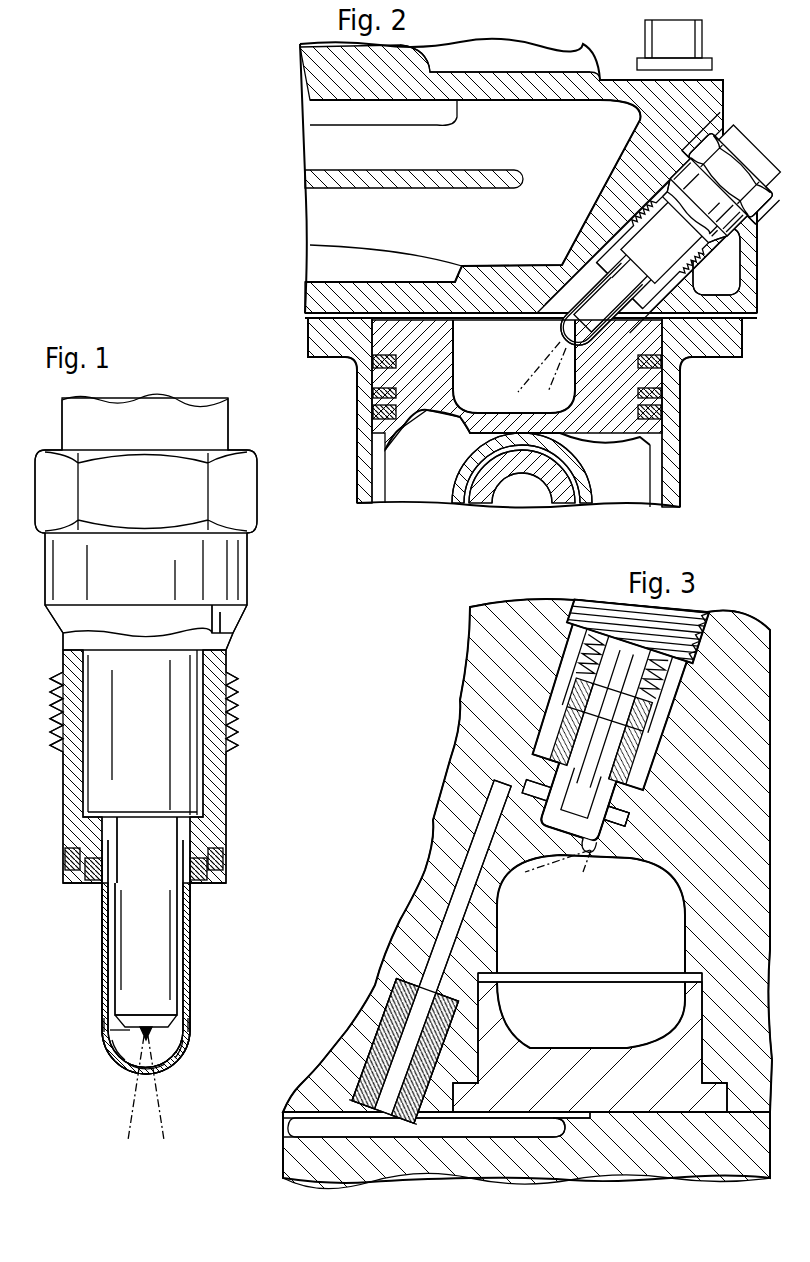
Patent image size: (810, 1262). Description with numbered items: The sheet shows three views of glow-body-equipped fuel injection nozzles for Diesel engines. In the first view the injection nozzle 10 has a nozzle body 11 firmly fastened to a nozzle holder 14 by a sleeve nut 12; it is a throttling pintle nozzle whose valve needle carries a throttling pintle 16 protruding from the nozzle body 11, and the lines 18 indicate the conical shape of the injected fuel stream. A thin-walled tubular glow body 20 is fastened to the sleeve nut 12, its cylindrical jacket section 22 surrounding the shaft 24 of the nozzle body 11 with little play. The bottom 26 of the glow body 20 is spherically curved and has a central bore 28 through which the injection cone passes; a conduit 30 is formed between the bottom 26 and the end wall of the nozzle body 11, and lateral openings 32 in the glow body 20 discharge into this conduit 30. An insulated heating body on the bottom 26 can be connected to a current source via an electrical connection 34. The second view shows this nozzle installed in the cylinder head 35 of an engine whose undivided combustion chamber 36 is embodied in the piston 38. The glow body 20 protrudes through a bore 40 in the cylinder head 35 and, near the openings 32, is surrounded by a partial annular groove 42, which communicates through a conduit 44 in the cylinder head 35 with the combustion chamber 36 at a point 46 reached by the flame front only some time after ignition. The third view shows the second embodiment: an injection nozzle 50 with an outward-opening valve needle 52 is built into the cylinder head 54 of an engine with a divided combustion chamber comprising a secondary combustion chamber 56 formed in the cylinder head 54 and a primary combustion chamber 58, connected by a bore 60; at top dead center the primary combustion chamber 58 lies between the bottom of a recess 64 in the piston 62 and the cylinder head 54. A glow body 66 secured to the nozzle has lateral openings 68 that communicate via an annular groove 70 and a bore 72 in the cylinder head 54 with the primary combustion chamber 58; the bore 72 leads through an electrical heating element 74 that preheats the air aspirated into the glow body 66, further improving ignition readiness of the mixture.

In FIG. 1, the injection nozzle 10 is at (202, 396).
In FIG. 2, the injection nozzle 10 is at (672, 162).
In FIG. 1, the nozzle body 11 is at (185, 772).
In FIG. 1, the sleeve nut 12 is at (239, 710).
In FIG. 1, the nozzle holder 14 is at (229, 418).
In FIG. 1, the throttling pintle 16 is at (136, 1050).
In FIG. 1, the lines indicating injection cone 18 is at (146, 1102).
In FIG. 1, the glow body 20 is at (190, 916).
In FIG. 1, the cylindrical jacket section 22 is at (103, 920).
In FIG. 1, the shaft 24 is at (127, 947).
In FIG. 1, the bottom 26 is at (186, 1052).
In FIG. 1, the central bore 28 is at (158, 1068).
In FIG. 1, the conduit 30 is at (122, 1034).
In FIG. 1, the lateral openings 32 is at (106, 1024).
In FIG. 2, the electrical connection 34 is at (575, 143).
In FIG. 1, the cylinder head 35 is at (236, 603).
In FIG. 2, the combustion chamber 36 is at (502, 408).
In FIG. 2, the piston 38 is at (383, 432).
In FIG. 2, the bore 40 is at (563, 290).
In FIG. 2, the partial annular groove 42 is at (556, 278).
In FIG. 2, the conduit 44 is at (537, 285).
In FIG. 2, the point 46 is at (540, 322).
In FIG. 3, the injection nozzle 50 is at (555, 690).
In FIG. 3, the valve needle 52 is at (582, 662).
In FIG. 3, the cylinder head 54 is at (472, 735).
In FIG. 3, the secondary combustion chamber 56 is at (630, 933).
In FIG. 3, the primary combustion chamber 58 is at (425, 1128).
In FIG. 3, the bore 60 is at (586, 1058).
In FIG. 3, the piston 62 is at (283, 1160).
In FIG. 3, the recess 64 is at (332, 1125).
In FIG. 3, the glow body 66 is at (592, 857).
In FIG. 3, the lateral openings 68 is at (620, 825).
In FIG. 3, the annular groove 70 is at (625, 845).
In FIG. 3, the bore 72 is at (506, 818).
In FIG. 3, the electrical heating element 74 is at (400, 1114).